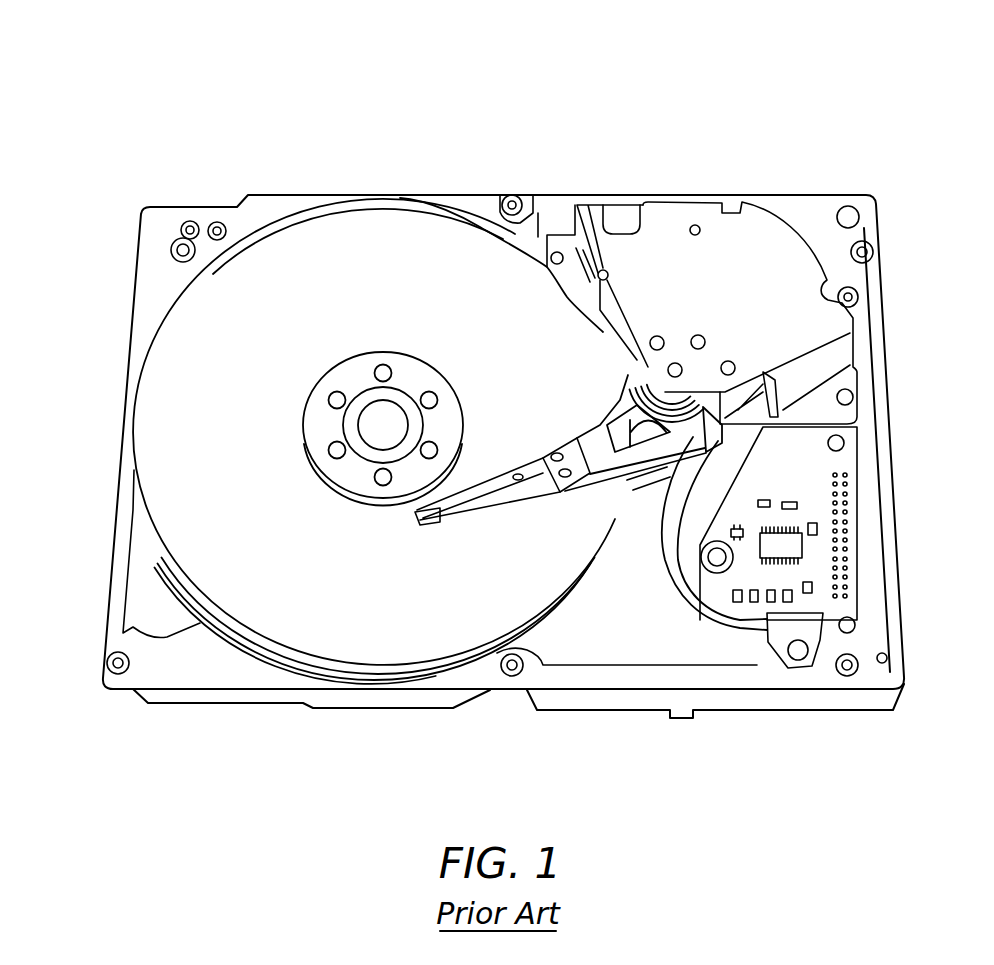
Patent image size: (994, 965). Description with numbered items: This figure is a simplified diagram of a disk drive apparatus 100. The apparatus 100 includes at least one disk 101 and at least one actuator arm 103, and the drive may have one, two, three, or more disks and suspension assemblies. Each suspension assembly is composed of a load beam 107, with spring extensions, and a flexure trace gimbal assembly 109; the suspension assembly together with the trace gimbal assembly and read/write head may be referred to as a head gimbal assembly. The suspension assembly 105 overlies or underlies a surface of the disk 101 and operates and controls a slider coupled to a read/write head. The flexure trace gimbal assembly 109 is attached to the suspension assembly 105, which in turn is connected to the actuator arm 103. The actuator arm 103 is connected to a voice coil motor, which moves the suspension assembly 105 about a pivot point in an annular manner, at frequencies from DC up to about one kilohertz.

The disk drive apparatus 100 is at (731, 59).
The disk 101 is at (190, 326).
The actuator arm 103 is at (630, 453).
The suspension assembly 105 is at (484, 545).
The load beam 107 is at (487, 480).
The flexure trace gimbal assembly 109 is at (386, 520).